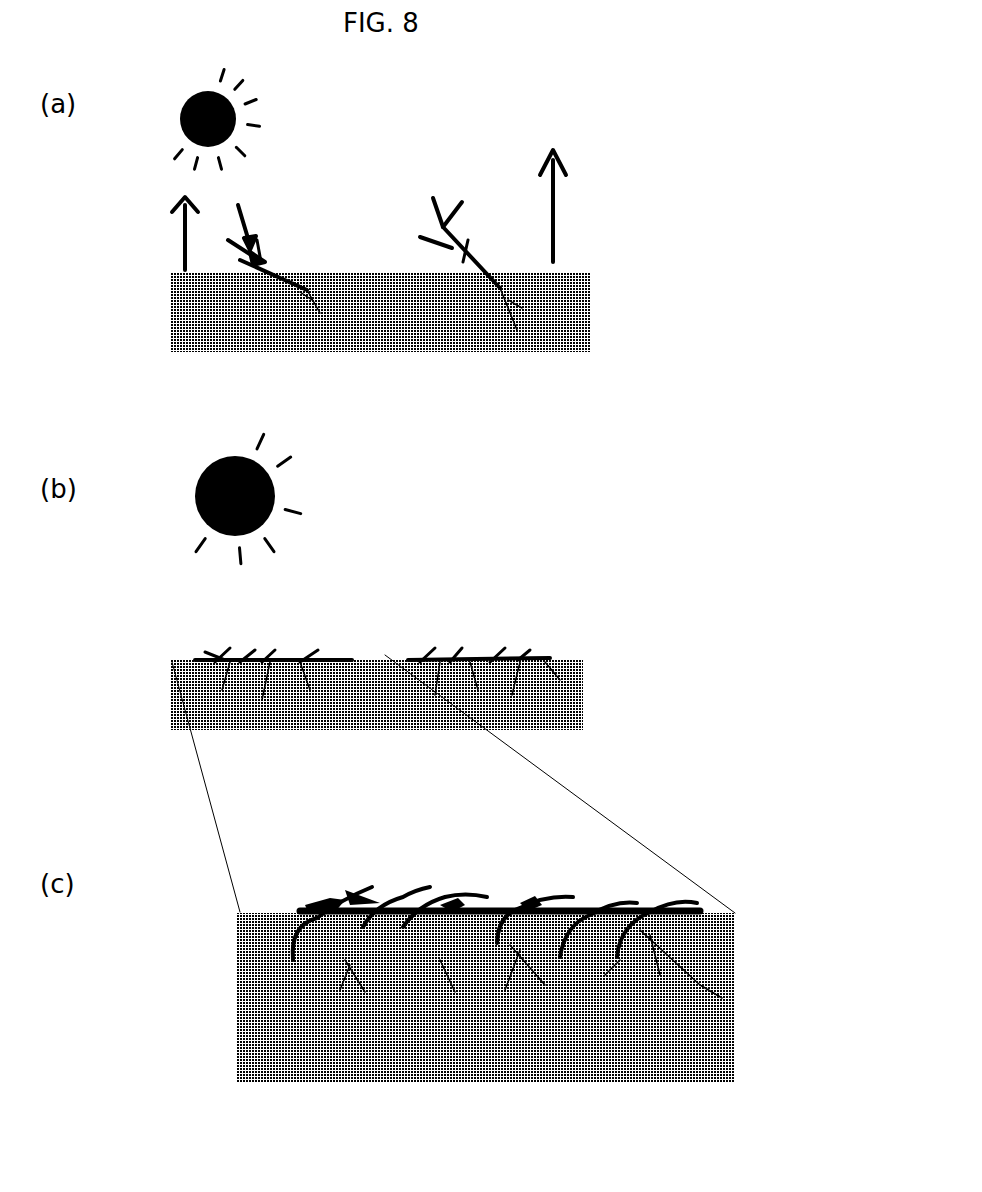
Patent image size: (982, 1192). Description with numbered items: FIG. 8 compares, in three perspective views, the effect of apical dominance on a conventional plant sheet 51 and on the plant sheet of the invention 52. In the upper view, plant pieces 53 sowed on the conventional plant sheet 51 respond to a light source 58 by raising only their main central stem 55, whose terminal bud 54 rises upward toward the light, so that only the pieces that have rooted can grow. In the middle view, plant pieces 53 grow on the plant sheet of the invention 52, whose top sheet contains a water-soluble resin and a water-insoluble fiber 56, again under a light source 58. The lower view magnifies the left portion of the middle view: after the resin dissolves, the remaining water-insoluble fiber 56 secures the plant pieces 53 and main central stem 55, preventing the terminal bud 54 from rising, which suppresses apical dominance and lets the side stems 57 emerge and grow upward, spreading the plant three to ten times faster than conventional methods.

The conventional plant sheet 51 is at (598, 300).
The plant sheet of the invention 52 is at (598, 698).
The plant pieces 53 is at (193, 645).
The terminal bud 54 is at (248, 206).
The main central stem 55 is at (278, 263).
The water-insoluble fiber 56 is at (399, 890).
The side stems 57 is at (455, 898).
The light source 58 is at (178, 97).